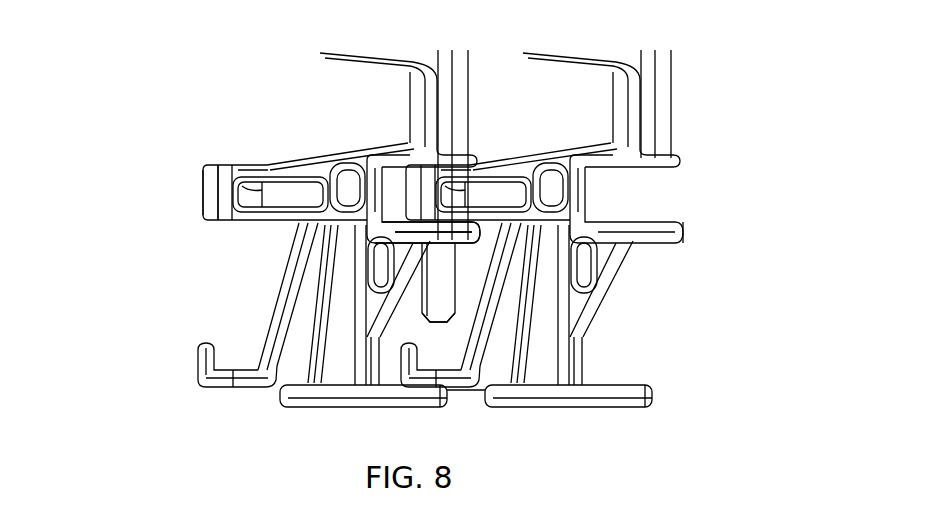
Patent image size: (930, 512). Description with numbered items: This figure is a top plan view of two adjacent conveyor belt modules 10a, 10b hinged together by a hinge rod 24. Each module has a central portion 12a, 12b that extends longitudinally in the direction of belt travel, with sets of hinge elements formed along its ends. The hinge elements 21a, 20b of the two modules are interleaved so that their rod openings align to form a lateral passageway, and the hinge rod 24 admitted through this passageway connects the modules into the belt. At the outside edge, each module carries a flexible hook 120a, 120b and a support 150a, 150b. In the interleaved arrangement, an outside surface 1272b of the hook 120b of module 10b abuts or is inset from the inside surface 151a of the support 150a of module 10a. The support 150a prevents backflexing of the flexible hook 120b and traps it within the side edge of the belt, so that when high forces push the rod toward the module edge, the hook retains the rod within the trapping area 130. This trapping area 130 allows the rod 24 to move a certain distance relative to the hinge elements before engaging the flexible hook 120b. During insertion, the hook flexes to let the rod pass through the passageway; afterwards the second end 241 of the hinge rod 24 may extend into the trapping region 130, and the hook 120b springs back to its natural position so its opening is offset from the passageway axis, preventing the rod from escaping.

The module 10a is at (107, 215).
The module 10b is at (766, 256).
The central portion 12a is at (187, 197).
The central portion 12b is at (697, 223).
The hinge element 20b is at (440, 145).
The hinge element 21a is at (427, 232).
The hinge rod 24 is at (447, 276).
The second end of the hinge rod 241 is at (421, 313).
The trapping area 130 is at (455, 345).
The flexible hook 120a is at (259, 313).
The flexible hook 120b is at (482, 290).
The support 150a is at (358, 398).
The support 150b is at (574, 395).
The inside surface of the support 151a is at (391, 387).
The outside surface of the hook 1272b is at (455, 390).